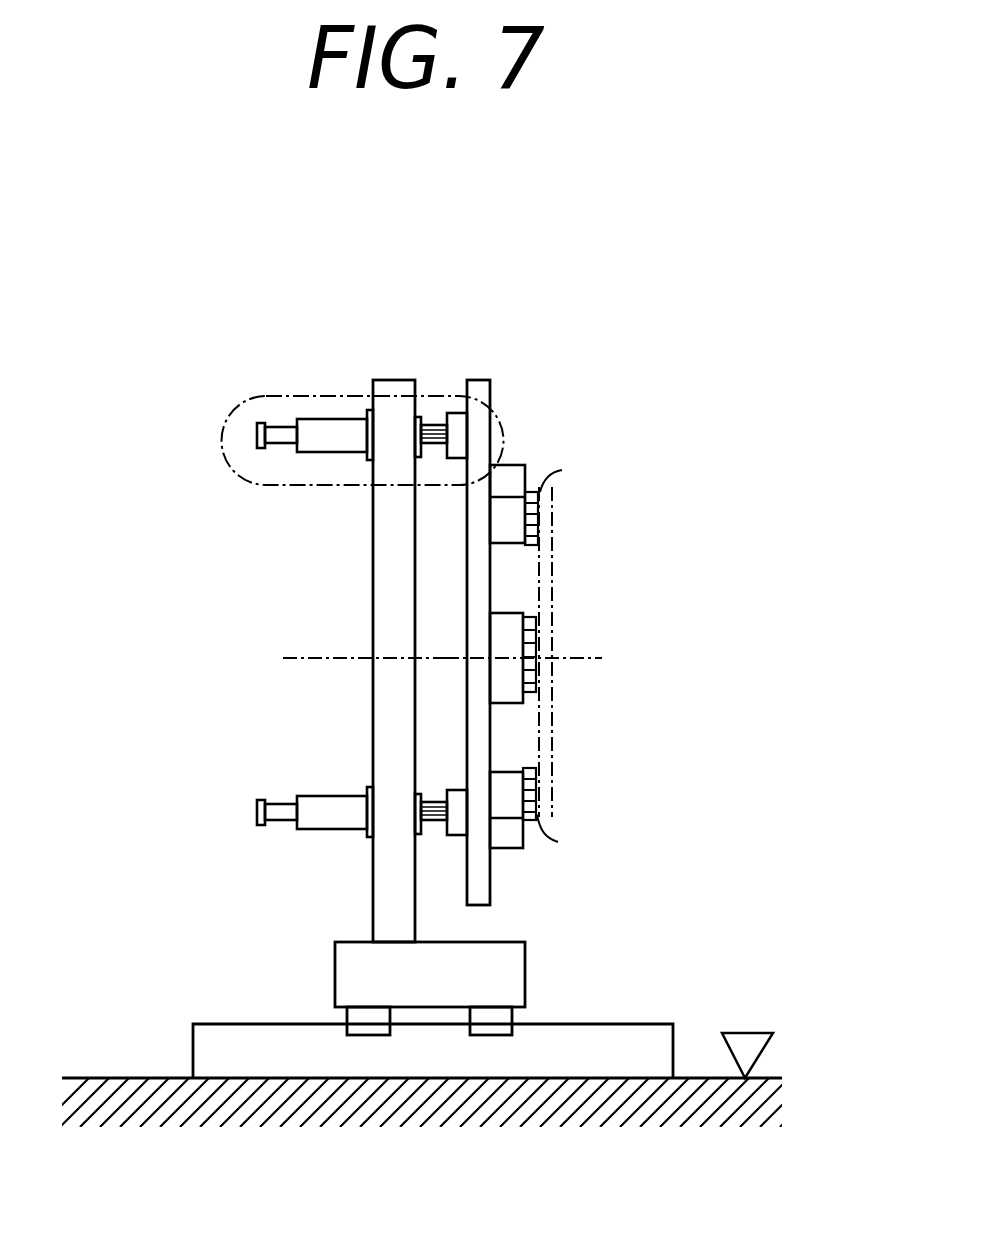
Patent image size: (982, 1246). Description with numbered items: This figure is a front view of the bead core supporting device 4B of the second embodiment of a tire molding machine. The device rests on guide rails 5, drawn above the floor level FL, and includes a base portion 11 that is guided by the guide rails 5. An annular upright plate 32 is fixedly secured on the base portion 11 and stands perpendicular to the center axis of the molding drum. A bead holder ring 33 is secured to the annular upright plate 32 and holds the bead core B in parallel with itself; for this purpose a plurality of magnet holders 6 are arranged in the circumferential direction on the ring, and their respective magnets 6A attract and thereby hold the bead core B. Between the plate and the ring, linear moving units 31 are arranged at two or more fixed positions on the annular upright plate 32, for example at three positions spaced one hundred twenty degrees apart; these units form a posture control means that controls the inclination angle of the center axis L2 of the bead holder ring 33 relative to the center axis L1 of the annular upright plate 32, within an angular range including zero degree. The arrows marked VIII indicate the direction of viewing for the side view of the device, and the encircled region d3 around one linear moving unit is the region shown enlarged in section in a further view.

The bead core supporting device 4B is at (540, 353).
The guide rails 5 is at (225, 1040).
The magnet holders 6 is at (510, 465).
The magnets 6A is at (538, 518).
The base portion 11 is at (345, 957).
The linear moving units 31 is at (320, 432).
The annular upright plate 32 is at (388, 547).
The bead holder ring 33 is at (478, 380).
The bead core B is at (552, 828).
The center axis of the annular upright plate L1 is at (330, 658).
The center axis of the bead holder ring L2 is at (575, 655).
The region d3 is at (222, 453).
The floor level FL is at (438, 1065).
The section line VIII- VIII is at (200, 614).